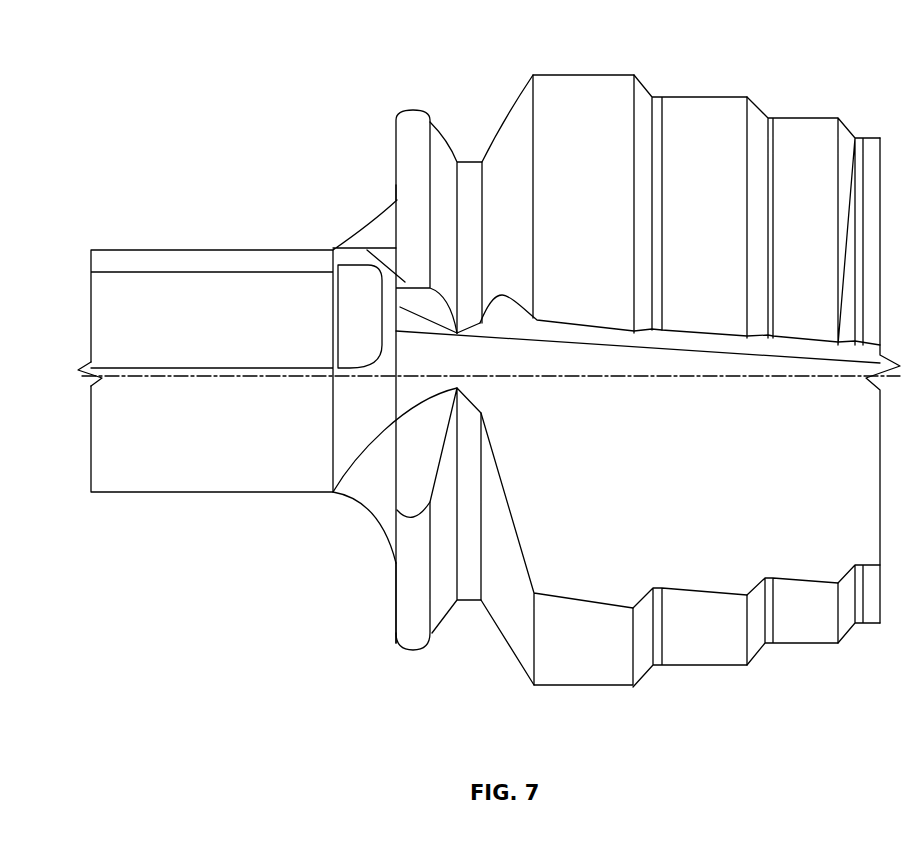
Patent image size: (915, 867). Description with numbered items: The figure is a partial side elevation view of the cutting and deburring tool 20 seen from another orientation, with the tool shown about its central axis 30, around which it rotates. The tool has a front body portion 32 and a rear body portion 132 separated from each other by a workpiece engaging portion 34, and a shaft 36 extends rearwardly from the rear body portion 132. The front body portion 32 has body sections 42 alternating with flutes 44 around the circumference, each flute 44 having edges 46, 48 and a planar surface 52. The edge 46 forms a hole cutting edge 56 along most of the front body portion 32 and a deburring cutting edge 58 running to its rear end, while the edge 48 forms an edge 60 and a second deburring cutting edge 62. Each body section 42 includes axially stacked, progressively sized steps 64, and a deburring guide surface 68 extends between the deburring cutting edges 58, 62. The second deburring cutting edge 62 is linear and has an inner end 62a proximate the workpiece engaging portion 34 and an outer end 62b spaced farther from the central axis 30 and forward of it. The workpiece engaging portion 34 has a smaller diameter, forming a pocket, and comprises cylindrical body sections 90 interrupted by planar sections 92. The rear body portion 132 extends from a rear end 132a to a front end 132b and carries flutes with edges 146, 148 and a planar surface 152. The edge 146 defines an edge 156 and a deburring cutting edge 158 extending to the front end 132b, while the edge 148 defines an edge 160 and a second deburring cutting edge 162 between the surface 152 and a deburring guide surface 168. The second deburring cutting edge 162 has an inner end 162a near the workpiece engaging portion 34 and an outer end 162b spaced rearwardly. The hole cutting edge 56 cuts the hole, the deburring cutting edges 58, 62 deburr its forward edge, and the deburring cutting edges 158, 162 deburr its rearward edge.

The cutting and deburring tool 20 is at (197, 115).
The central axis 30 is at (826, 378).
The front body portion 32 is at (615, 73).
The workpiece engaging portion 34 is at (468, 180).
The shaft 36 is at (168, 270).
The body section 42 is at (720, 125).
The flute 44 is at (746, 500).
The edge 46 is at (677, 330).
The edge 48 is at (672, 593).
The surface 52 is at (722, 552).
The hole cutting edge 56 is at (565, 323).
The deburring cutting edge 58 is at (520, 307).
The edge 60 is at (617, 602).
The second deburring cutting edge 62 is at (508, 520).
The inner end 62a is at (481, 413).
The outer end 62b is at (537, 592).
The step 64 is at (810, 633).
The deburring guide surface 68 is at (513, 627).
The body section 90 is at (470, 587).
The planar section 92 is at (473, 383).
The rear body portion 132 is at (393, 113).
The rear end 132a is at (397, 193).
The front end 132b is at (457, 333).
The edge 146 is at (412, 287).
The edge 148 is at (418, 518).
The surface 152 is at (407, 445).
The edge 156 is at (405, 282).
The deburring cutting edge 158 is at (457, 333).
The edge 160 is at (405, 520).
The second deburring cutting edge 162 is at (438, 460).
The inner end 162a is at (333, 492).
The outer end 162b is at (428, 508).
The deburring guide surface 168 is at (436, 618).